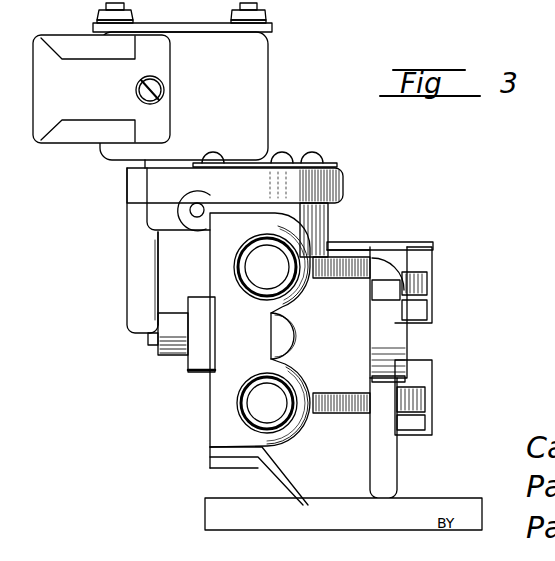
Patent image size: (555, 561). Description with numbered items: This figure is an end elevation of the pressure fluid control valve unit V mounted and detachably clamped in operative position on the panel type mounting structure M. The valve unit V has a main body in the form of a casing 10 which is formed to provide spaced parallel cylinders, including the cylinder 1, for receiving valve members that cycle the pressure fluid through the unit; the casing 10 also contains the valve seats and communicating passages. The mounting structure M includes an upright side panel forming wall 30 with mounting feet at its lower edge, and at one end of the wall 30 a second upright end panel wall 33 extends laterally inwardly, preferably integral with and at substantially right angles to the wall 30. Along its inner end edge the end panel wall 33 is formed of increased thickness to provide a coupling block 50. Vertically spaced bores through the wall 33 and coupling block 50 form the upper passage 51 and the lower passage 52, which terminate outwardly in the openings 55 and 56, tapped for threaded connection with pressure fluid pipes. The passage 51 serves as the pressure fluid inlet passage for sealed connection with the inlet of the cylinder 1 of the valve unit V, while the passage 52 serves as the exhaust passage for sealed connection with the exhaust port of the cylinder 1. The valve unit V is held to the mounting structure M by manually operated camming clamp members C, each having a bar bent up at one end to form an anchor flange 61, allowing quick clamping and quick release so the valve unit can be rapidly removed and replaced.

The cylinder 1 is at (345, 234).
The casing 10 is at (344, 168).
The pressure fluid control valve unit V is at (343, 216).
The side panel forming wall 30 is at (380, 472).
The end panel wall 33 is at (355, 357).
The coupling block 50 is at (222, 432).
The passage 51 is at (264, 266).
The passage 52 is at (243, 386).
The opening 55 is at (289, 284).
The opening 56 is at (267, 403).
The anchor flange 61 is at (205, 326).
The camming clamp member C is at (188, 370).
The panel type mounting structure M is at (204, 414).